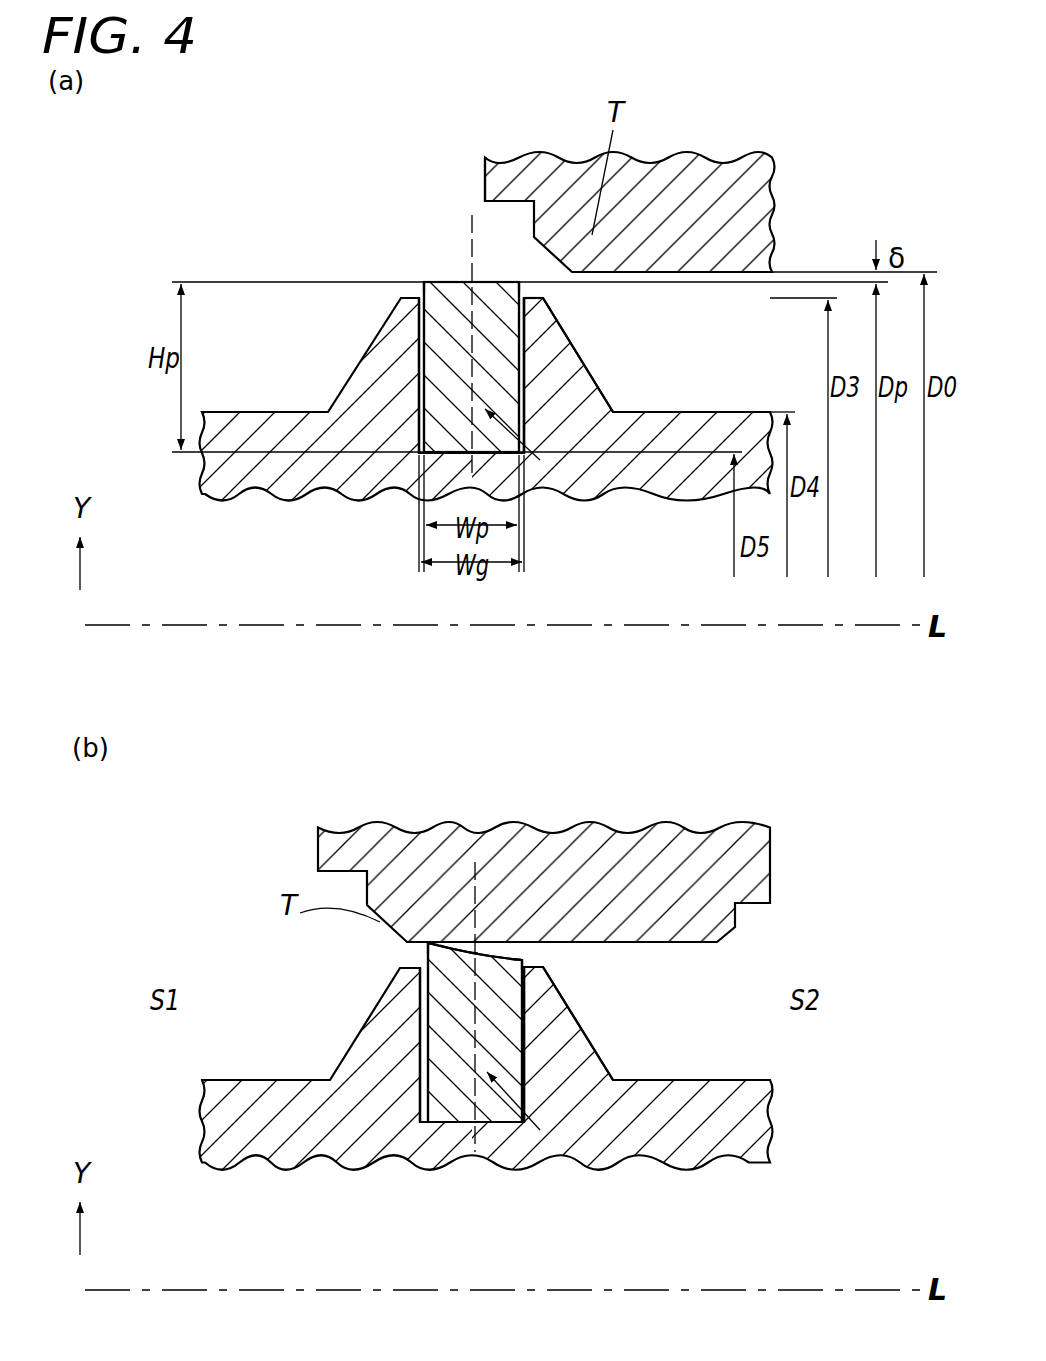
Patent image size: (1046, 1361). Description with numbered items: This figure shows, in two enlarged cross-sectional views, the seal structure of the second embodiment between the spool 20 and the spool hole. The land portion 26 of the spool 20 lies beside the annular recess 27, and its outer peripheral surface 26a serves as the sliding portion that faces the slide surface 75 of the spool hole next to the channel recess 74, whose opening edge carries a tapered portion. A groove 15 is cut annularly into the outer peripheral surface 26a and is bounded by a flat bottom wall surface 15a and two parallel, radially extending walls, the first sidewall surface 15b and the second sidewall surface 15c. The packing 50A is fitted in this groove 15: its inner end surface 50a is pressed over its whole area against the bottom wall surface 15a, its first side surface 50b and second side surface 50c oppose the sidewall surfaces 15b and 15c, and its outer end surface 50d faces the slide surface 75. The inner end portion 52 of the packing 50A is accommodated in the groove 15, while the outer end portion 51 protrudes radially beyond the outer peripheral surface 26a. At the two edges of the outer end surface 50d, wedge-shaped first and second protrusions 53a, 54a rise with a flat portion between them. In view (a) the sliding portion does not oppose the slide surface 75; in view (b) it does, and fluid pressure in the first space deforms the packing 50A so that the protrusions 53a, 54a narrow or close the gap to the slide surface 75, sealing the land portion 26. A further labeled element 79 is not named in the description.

The spool 20 is at (297, 1138).
The groove 15 is at (414, 330).
The bottom wall surface 15a is at (412, 445).
The first sidewall surface 15b is at (419, 376).
The second sidewall surface 15c is at (524, 343).
The land portion 26 is at (553, 378).
The outer peripheral surface 26a is at (530, 286).
The annular recess 27 is at (735, 412).
The packing 50A is at (453, 323).
The inner end surface 50a is at (498, 455).
The first side surface 50b is at (421, 351).
The second side surface 50c is at (550, 410).
The outer end surface 50d is at (438, 278).
The outer end portion 51 is at (457, 278).
The inner end portion 52 is at (540, 460).
The first protrusion 53a is at (418, 279).
The second protrusion 54a is at (545, 258).
The channel recess 74 is at (515, 205).
The slide surface 75 is at (672, 274).
The protrusion of upper member 79 is at (485, 178).